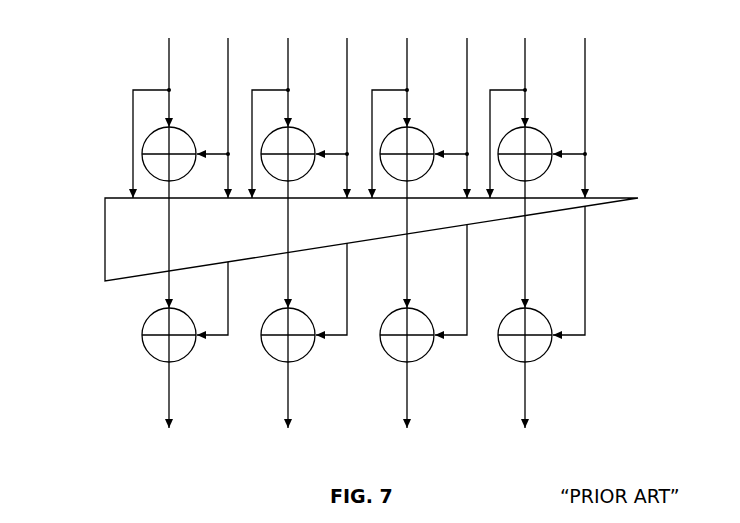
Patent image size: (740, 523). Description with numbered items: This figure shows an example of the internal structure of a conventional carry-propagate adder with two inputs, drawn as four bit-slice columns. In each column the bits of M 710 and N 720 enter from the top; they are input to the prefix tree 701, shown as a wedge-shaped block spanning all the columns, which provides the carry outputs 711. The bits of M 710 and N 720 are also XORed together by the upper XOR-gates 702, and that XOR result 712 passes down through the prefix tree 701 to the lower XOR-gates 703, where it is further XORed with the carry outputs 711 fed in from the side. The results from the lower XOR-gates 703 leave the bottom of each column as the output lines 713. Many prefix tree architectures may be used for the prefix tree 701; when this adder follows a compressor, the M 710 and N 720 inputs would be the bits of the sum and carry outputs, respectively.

The prefix tree 701 is at (103, 241).
The XOR-gates 702 is at (173, 127).
The XOR-gates 703 is at (177, 361).
The M 710 is at (168, 85).
The carry outputs 711 is at (229, 291).
The XOR result 712 is at (173, 183).
The R output line 713 is at (167, 388).
The N 720 is at (227, 81).